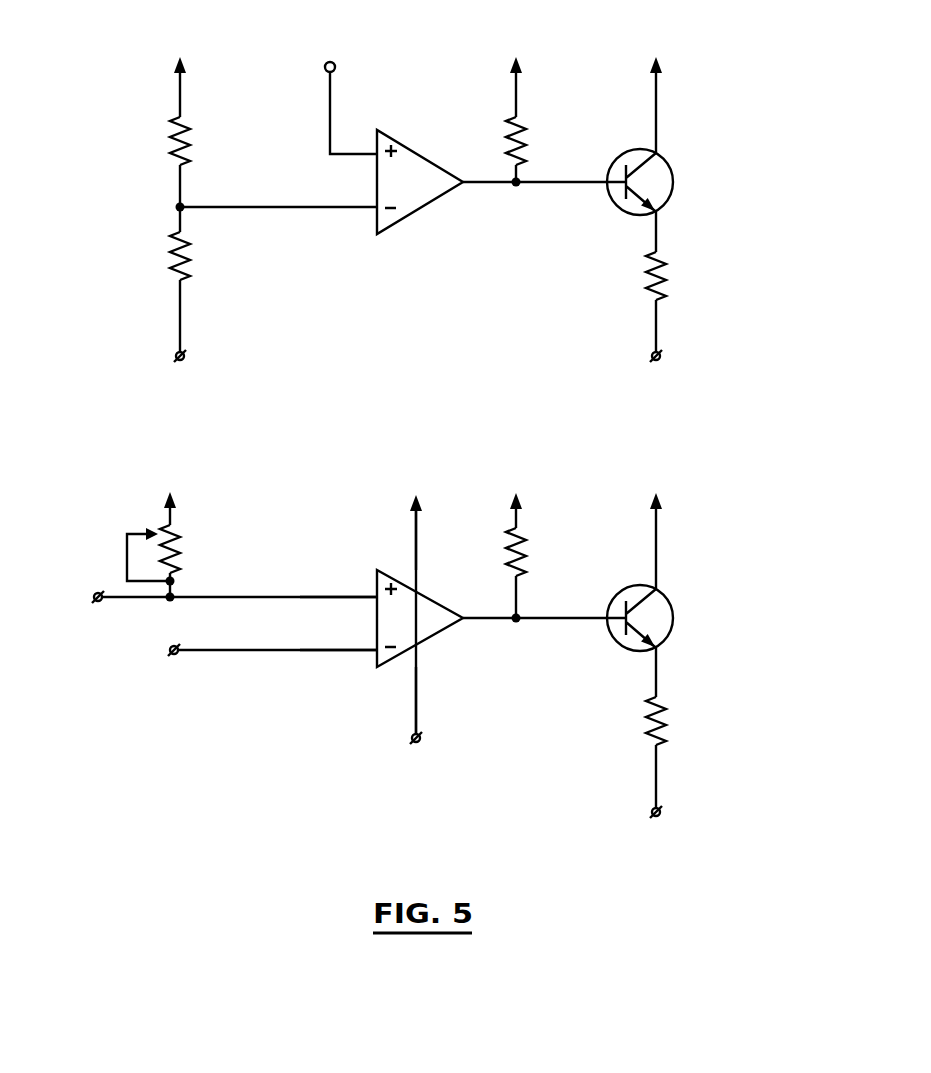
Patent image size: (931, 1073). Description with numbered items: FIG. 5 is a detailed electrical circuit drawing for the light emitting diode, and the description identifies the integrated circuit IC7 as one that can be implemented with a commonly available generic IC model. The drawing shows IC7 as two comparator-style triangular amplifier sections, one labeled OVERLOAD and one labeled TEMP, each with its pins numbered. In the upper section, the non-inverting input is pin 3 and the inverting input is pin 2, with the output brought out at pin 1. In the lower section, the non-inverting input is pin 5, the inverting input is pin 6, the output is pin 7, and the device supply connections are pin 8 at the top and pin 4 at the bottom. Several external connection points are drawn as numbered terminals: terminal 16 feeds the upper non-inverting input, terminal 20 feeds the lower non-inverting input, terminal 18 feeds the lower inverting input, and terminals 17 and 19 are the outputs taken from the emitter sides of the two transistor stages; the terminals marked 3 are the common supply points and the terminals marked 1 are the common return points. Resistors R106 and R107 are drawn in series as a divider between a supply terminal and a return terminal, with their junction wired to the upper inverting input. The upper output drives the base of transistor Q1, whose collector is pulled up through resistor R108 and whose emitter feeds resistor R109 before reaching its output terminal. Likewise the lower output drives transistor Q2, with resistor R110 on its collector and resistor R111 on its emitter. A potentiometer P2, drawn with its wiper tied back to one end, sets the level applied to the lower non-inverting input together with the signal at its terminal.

The common/ground terminal 1 is at (324, 462).
The inverting input pin of IC7 (overload comparator) 2 is at (278, 191).
The supply voltage terminal 3 is at (413, 380).
The negative supply pin of IC7 4 is at (429, 688).
The non-inverting input pin of IC7 (temperature comparator) 5 is at (338, 580).
The inverting input pin of IC7 (temperature comparator) 6 is at (338, 632).
The output pin of IC7 (temperature comparator) 7 is at (544, 605).
The positive supply pin of IC7 8 is at (427, 552).
The overload signal input terminal 16 is at (347, 91).
The overload output terminal 17 is at (657, 347).
The temperature sensor input terminal 18 is at (255, 650).
The temperature output terminal 19 is at (657, 796).
The temperature reference input terminal 20 is at (216, 597).
The resistor 100K R106 is at (126, 142).
The resistor 1K R107 is at (136, 235).
The resistor 100K R108 is at (547, 133).
The resistor 1.6K R109 is at (704, 258).
The resistor 100K R110 is at (564, 570).
The resistor 1.6K R111 is at (704, 697).
The IC IC7 is at (347, 409).
The transistor MPSA 14 Q1 is at (724, 171).
The transistor MPSA 14 Q2 is at (724, 608).
The potentiometer 20K P2 is at (209, 560).